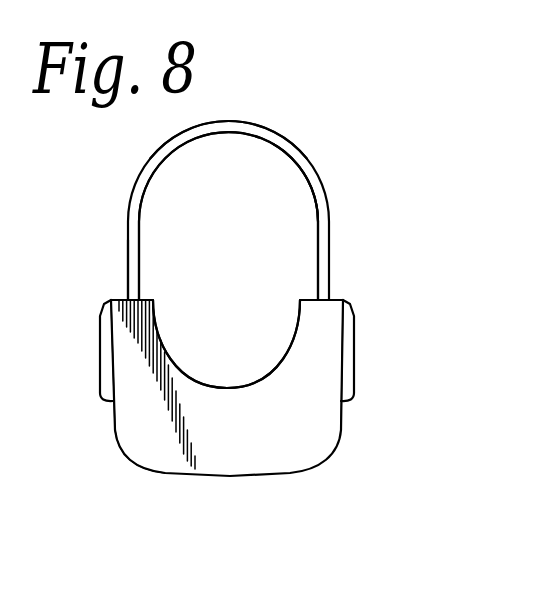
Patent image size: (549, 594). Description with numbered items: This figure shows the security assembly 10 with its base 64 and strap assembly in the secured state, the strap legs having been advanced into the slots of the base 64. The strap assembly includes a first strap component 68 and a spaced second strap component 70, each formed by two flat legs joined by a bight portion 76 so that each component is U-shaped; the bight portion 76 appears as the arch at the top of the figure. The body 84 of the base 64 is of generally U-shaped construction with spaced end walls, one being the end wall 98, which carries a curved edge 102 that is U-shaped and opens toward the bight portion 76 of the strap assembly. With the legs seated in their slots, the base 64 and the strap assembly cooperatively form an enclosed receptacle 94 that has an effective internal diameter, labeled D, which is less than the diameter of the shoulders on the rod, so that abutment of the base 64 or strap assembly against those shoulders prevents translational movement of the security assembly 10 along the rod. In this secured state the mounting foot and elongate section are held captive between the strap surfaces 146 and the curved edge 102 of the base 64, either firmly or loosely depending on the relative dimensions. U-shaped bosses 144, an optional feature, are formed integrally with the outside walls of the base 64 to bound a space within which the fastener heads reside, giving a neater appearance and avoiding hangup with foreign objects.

The security assembly 10 is at (251, 344).
The base 64 is at (323, 445).
The first strap component 68 is at (127, 265).
The second strap component 70 is at (330, 240).
The bight portion 76 is at (240, 122).
The body 84 is at (142, 431).
The enclosed receptacle 94 is at (139, 217).
The end wall 98 is at (303, 415).
The curved edge 102 is at (197, 378).
The U-shaped boss 144 is at (100, 355).
The strap surface 146 is at (297, 162).